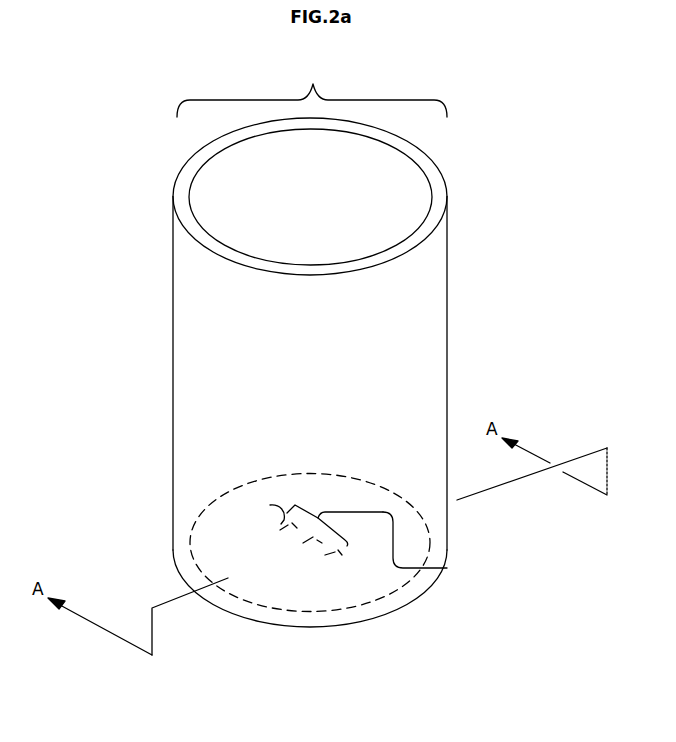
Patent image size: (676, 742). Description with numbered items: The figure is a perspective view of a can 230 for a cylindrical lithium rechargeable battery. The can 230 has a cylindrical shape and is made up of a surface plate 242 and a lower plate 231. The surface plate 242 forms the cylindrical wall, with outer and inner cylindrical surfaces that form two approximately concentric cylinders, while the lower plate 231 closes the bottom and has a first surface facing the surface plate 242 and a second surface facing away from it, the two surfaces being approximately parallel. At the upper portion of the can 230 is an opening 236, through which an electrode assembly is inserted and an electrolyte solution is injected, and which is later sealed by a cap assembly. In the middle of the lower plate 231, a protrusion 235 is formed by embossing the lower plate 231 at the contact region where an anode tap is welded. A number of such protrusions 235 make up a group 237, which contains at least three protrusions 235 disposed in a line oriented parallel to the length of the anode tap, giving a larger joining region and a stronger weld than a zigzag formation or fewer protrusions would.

The can 230 is at (330, 372).
The opening 236 is at (312, 80).
The surface plate 242 is at (187, 338).
The lower plate 231 is at (269, 492).
The protrusion 235 is at (270, 505).
The group of protrusions 237 is at (447, 568).